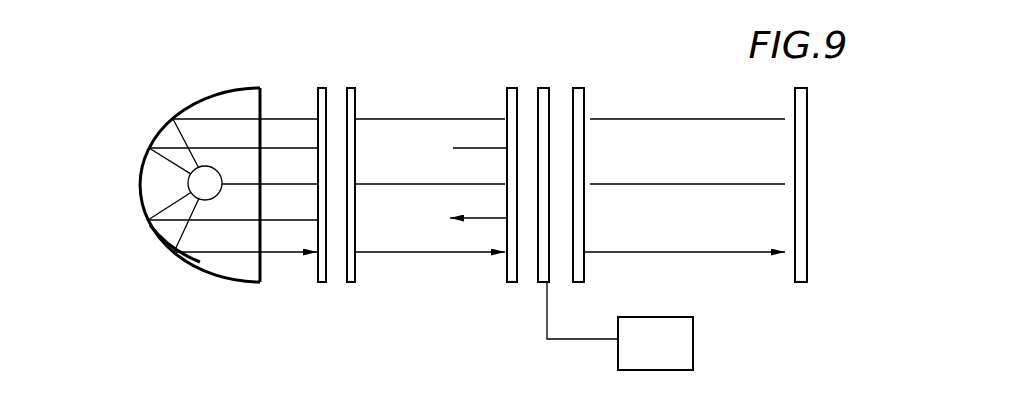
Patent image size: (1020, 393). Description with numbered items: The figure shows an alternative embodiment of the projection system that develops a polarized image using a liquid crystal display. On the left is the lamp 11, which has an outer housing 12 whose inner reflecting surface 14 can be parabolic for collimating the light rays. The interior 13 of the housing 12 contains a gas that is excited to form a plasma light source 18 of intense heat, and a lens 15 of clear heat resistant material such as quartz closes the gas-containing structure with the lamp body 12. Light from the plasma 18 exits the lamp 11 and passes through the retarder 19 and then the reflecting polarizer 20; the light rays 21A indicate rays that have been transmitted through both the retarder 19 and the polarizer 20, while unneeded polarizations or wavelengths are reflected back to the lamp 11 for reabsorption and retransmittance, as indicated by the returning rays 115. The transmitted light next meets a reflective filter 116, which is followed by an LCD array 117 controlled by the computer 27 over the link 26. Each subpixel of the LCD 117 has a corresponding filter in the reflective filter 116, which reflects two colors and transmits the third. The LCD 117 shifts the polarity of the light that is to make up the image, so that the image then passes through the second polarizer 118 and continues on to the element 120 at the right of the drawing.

The lamp 11 is at (167, 128).
The outer housing 12 is at (218, 275).
The interior 13 is at (235, 102).
The inner reflecting surface 14 is at (166, 231).
The lens 15 is at (262, 108).
The plasma light source 18 is at (188, 183).
The retarder 19 is at (323, 283).
The reflecting polarizer 20 is at (352, 88).
The light rays 21A is at (426, 118).
The link 26 is at (580, 342).
The computer 27 is at (655, 343).
The reflected light 115 is at (468, 214).
The reflective filter 116 is at (513, 88).
The LCD array 117 is at (548, 88).
The second polarizer 118 is at (578, 88).
The screen 120 is at (800, 282).